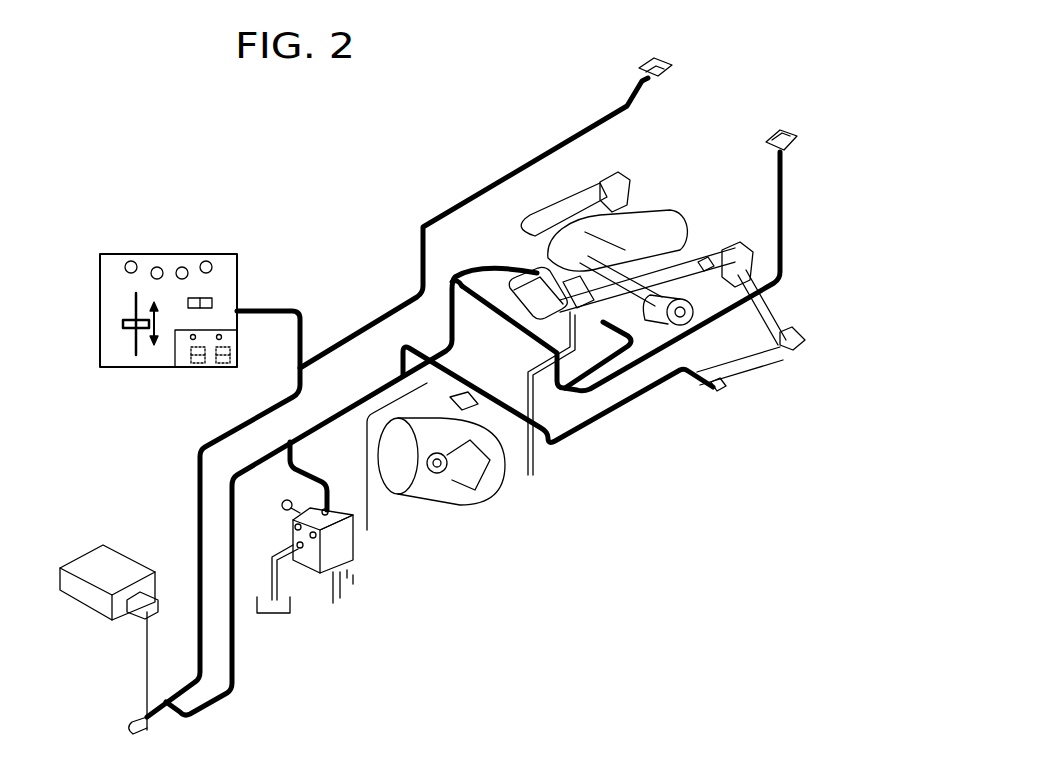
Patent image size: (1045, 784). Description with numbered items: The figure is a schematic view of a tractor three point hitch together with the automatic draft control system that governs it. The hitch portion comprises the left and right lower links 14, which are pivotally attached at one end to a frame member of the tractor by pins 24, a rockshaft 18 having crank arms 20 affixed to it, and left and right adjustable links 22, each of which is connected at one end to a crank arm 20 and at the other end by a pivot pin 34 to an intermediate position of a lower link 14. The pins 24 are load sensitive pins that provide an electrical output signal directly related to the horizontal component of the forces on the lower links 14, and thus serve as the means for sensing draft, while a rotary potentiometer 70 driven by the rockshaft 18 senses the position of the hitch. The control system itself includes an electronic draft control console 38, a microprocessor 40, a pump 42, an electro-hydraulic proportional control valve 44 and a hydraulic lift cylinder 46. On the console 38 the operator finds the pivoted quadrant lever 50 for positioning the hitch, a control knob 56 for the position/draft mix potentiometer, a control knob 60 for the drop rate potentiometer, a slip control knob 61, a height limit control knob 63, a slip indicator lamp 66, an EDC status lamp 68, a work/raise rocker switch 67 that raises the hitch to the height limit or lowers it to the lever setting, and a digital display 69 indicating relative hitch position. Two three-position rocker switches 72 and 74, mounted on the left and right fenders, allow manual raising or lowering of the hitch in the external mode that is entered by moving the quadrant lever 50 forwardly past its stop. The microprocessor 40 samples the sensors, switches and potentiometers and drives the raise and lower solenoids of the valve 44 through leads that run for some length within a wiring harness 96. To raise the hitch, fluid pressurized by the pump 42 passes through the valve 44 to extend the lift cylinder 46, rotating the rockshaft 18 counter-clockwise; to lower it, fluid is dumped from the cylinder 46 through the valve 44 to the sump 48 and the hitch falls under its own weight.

The lower links 14 is at (612, 310).
The rockshaft 18 is at (683, 314).
The crank arms 20 is at (600, 182).
The adjustable links 22 is at (640, 205).
The pins 24 is at (650, 392).
The pivot pin 34 is at (698, 257).
The electronic draft control console 38 is at (262, 262).
The microprocessor 40 is at (128, 548).
The pump 42 is at (471, 410).
The electro-hydraulic proportional control valve 44 is at (286, 530).
The hydraulic lift cylinder 46 is at (537, 273).
The sump 48 is at (292, 604).
The quadrant lever 50 is at (123, 324).
The control knob 56 is at (182, 265).
The control knob 60 is at (206, 259).
The slip control knob 61 is at (131, 259).
The height limit control knob 63 is at (157, 265).
The slip indicator lamp 66 is at (192, 338).
The work/raise rocker switch 67 is at (213, 303).
The EDC status lamp 68 is at (222, 336).
The digital display 69 is at (240, 367).
The rotary potentiometer 70 is at (527, 232).
The three-position rocker switch 72 is at (670, 72).
The three-position rocker switch 74 is at (797, 143).
The wiring harness 96 is at (293, 440).